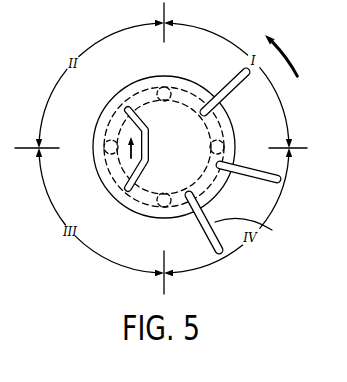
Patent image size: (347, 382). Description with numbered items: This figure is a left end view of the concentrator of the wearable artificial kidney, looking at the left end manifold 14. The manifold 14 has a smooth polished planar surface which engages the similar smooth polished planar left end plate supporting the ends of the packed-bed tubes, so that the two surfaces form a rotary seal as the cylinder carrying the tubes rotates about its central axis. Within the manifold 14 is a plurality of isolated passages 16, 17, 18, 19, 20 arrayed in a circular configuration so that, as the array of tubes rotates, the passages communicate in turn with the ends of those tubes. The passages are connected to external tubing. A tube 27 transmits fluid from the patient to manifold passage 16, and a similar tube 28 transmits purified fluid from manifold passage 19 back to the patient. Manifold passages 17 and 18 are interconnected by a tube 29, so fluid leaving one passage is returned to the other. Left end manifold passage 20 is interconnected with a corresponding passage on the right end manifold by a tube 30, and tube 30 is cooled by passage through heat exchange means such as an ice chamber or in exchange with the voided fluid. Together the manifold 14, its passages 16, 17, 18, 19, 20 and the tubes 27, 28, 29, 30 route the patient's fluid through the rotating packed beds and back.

The left end manifold 14 is at (232, 119).
The manifold passage 16 is at (184, 88).
The manifold passage 17 is at (148, 87).
The manifold passage 18 is at (101, 180).
The manifold passage 19 is at (182, 208).
The manifold passage 20 is at (238, 143).
The tube 27 is at (228, 84).
The tube 28 is at (272, 230).
The tube 29 is at (156, 141).
The tube 30 is at (257, 183).